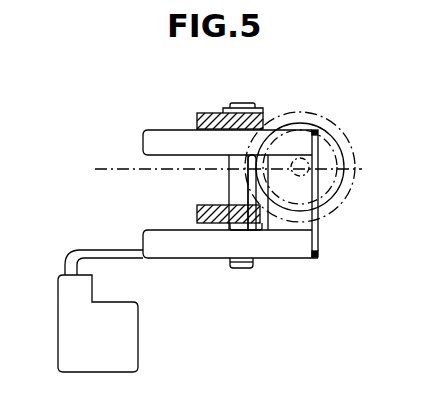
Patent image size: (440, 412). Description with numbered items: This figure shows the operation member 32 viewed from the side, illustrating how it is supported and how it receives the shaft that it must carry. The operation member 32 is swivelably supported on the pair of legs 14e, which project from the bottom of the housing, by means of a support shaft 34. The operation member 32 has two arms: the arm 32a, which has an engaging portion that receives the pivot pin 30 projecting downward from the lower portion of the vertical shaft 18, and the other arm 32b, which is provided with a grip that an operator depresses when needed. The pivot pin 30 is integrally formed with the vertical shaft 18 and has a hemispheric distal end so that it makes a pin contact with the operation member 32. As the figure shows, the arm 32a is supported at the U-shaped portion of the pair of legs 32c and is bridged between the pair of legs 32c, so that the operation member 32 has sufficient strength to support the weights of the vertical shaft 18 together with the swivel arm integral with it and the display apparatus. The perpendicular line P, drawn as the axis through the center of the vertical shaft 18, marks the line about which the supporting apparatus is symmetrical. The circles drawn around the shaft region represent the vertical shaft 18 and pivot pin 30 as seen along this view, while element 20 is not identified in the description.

The perpendicular line P is at (118, 167).
The legs 14e is at (262, 126).
The vertical shaft 18 is at (336, 163).
The rotor 20 is at (345, 145).
The pivot pin 30 is at (344, 186).
The operation member 32 is at (82, 248).
The arm 32a is at (309, 241).
The arm 32b is at (131, 352).
The pair of legs 32c is at (163, 147).
The support shaft 34 is at (238, 270).